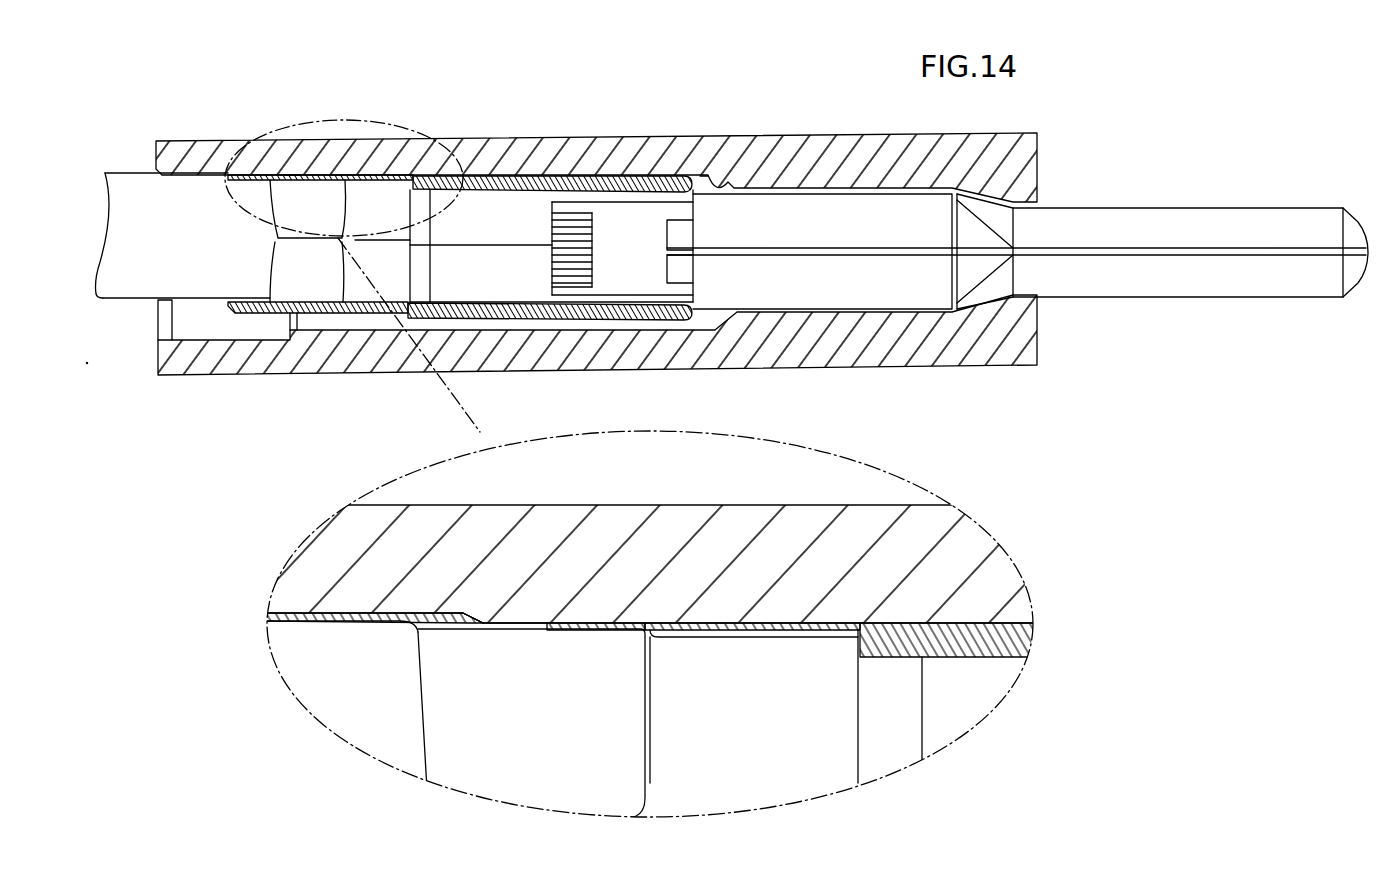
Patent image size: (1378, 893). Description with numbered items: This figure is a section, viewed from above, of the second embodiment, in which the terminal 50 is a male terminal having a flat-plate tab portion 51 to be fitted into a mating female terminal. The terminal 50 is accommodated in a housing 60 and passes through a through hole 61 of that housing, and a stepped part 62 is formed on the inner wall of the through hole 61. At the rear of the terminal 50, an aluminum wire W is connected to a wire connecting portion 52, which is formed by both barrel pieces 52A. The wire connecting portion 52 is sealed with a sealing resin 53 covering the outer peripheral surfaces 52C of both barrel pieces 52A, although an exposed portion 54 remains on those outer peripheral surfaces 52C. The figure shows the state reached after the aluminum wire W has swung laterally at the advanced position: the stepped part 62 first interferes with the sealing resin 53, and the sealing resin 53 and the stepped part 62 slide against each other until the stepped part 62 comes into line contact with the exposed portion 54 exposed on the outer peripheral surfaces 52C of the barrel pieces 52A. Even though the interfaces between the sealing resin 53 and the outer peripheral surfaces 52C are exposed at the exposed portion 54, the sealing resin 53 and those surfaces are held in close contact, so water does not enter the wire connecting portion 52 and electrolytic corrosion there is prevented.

The aluminum wire W is at (132, 197).
The terminal 50 is at (700, 182).
The tab portion 51 is at (1205, 218).
The wire connecting portion 52 is at (492, 213).
The barrel pieces 52A is at (318, 198).
The outer peripheral surfaces 52C is at (346, 172).
The sealing resin 53 is at (468, 176).
The exposed portion 54 is at (490, 620).
The housing 60 is at (855, 137).
The through hole 61 is at (716, 177).
The stepped part 62 is at (289, 173).